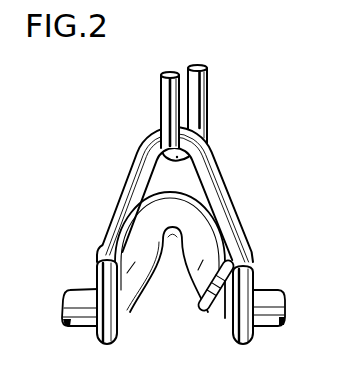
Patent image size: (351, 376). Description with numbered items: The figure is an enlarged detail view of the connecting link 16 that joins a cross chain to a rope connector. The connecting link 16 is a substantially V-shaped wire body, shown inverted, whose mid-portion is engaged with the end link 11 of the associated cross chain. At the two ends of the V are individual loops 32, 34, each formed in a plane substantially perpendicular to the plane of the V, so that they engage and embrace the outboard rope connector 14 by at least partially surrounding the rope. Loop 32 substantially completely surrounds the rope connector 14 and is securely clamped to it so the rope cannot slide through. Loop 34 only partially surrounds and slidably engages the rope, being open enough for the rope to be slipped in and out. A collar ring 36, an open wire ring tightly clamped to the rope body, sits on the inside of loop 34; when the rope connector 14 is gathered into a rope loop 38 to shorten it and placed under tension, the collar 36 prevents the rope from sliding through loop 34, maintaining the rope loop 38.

The end link 11 is at (160, 95).
The connecting link 16 is at (225, 176).
The rope loop 38 is at (167, 212).
The outboard rope connector 14 is at (77, 302).
The loop 32 is at (118, 334).
The loop 34 is at (254, 338).
The collar ring 36 is at (205, 308).